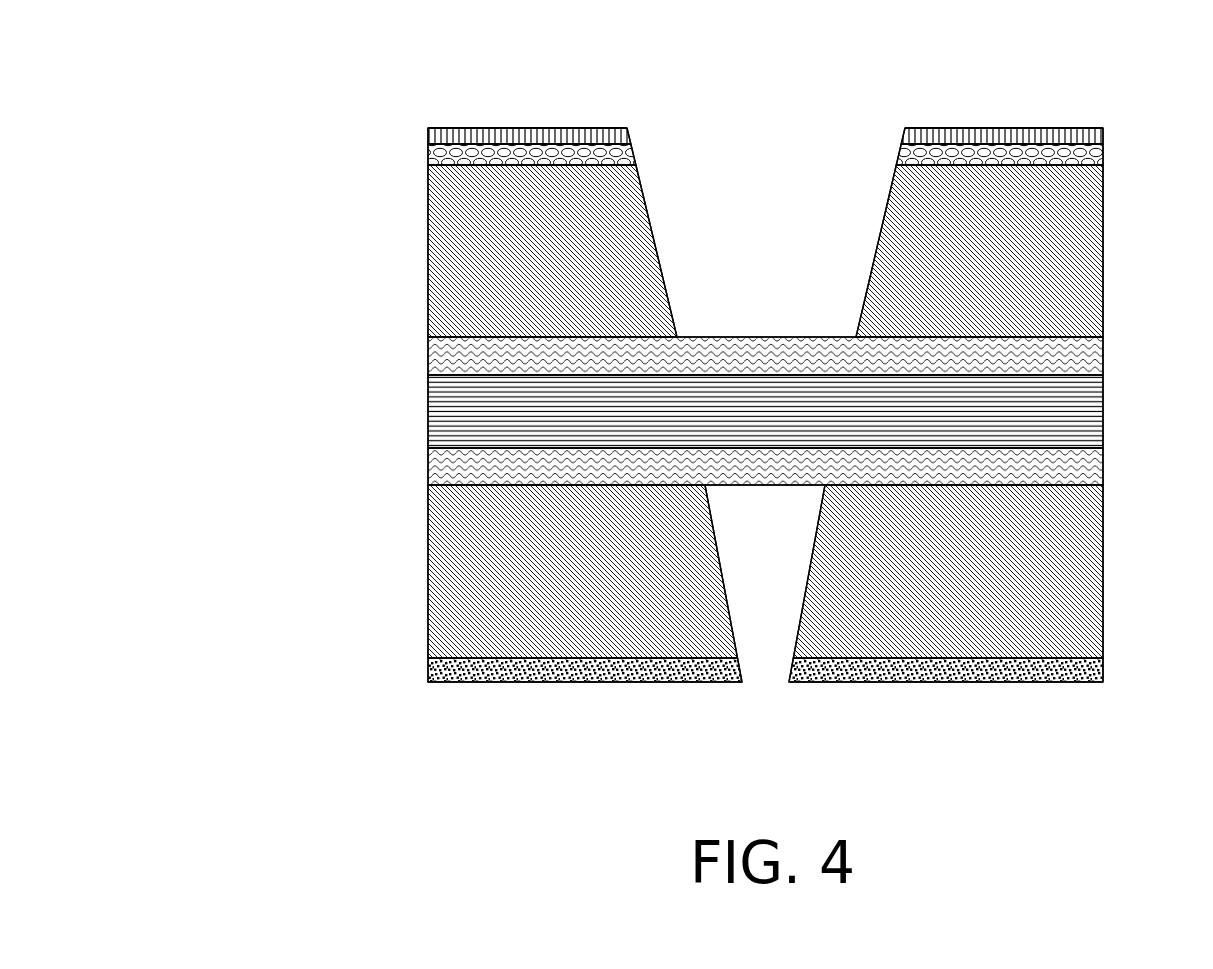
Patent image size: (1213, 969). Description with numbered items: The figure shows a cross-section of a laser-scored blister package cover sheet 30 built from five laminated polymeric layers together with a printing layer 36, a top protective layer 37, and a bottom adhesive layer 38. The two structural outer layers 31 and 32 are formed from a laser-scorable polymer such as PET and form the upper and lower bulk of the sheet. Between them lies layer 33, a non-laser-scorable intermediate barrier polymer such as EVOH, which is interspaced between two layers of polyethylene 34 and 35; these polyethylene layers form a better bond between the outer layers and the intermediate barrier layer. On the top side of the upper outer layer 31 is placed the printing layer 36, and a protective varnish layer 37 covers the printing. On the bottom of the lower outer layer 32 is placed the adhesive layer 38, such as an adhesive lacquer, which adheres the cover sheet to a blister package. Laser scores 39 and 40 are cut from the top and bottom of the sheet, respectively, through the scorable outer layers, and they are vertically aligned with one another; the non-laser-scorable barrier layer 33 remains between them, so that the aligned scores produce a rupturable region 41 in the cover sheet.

The laser-scored blister package cover sheet 30 is at (298, 212).
The structural outer layer 31 is at (1090, 266).
The structural outer layer 32 is at (1090, 584).
The intermediate barrier polymer layer 33 is at (1092, 413).
The polyethylene layer 34 is at (1093, 361).
The polyethylene layer 35 is at (1092, 471).
The printing layer 36 is at (1093, 158).
The protective varnish layer 37 is at (1092, 134).
The adhesive layer 38 is at (1092, 671).
The laser score 39 is at (757, 272).
The laser score 40 is at (762, 553).
The rupturable region 41 is at (753, 416).